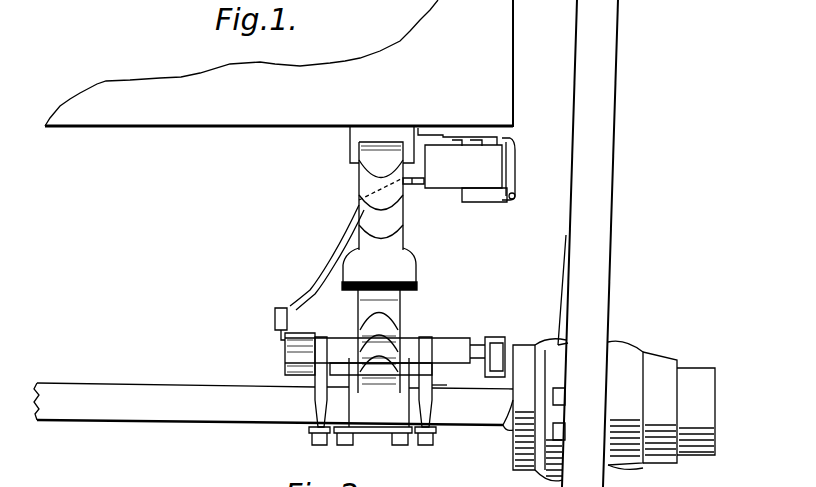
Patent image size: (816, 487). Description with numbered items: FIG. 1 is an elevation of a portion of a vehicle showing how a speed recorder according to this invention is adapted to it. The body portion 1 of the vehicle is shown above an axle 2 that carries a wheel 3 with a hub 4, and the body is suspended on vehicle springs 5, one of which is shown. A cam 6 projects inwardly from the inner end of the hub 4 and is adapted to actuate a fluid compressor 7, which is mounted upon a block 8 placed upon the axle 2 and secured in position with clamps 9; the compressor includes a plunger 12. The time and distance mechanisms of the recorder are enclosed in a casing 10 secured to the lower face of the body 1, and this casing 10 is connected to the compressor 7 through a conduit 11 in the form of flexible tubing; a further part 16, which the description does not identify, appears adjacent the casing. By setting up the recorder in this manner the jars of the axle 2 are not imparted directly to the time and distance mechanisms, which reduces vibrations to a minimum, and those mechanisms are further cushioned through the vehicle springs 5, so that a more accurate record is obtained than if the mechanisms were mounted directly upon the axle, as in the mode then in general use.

The body portion of the vehicle 1 is at (227, 118).
The axle 2 is at (88, 387).
The wheel 3 is at (603, 168).
The hub 4 is at (628, 358).
The vehicle spring 5 is at (396, 241).
The cam 6 is at (505, 430).
The fluid compressor 7 is at (405, 350).
The block 8 is at (437, 386).
The clamps 9 is at (316, 396).
The casing 10 is at (455, 165).
The conduit 11 is at (322, 278).
The plunger 12 is at (474, 345).
The clip 16 is at (478, 134).